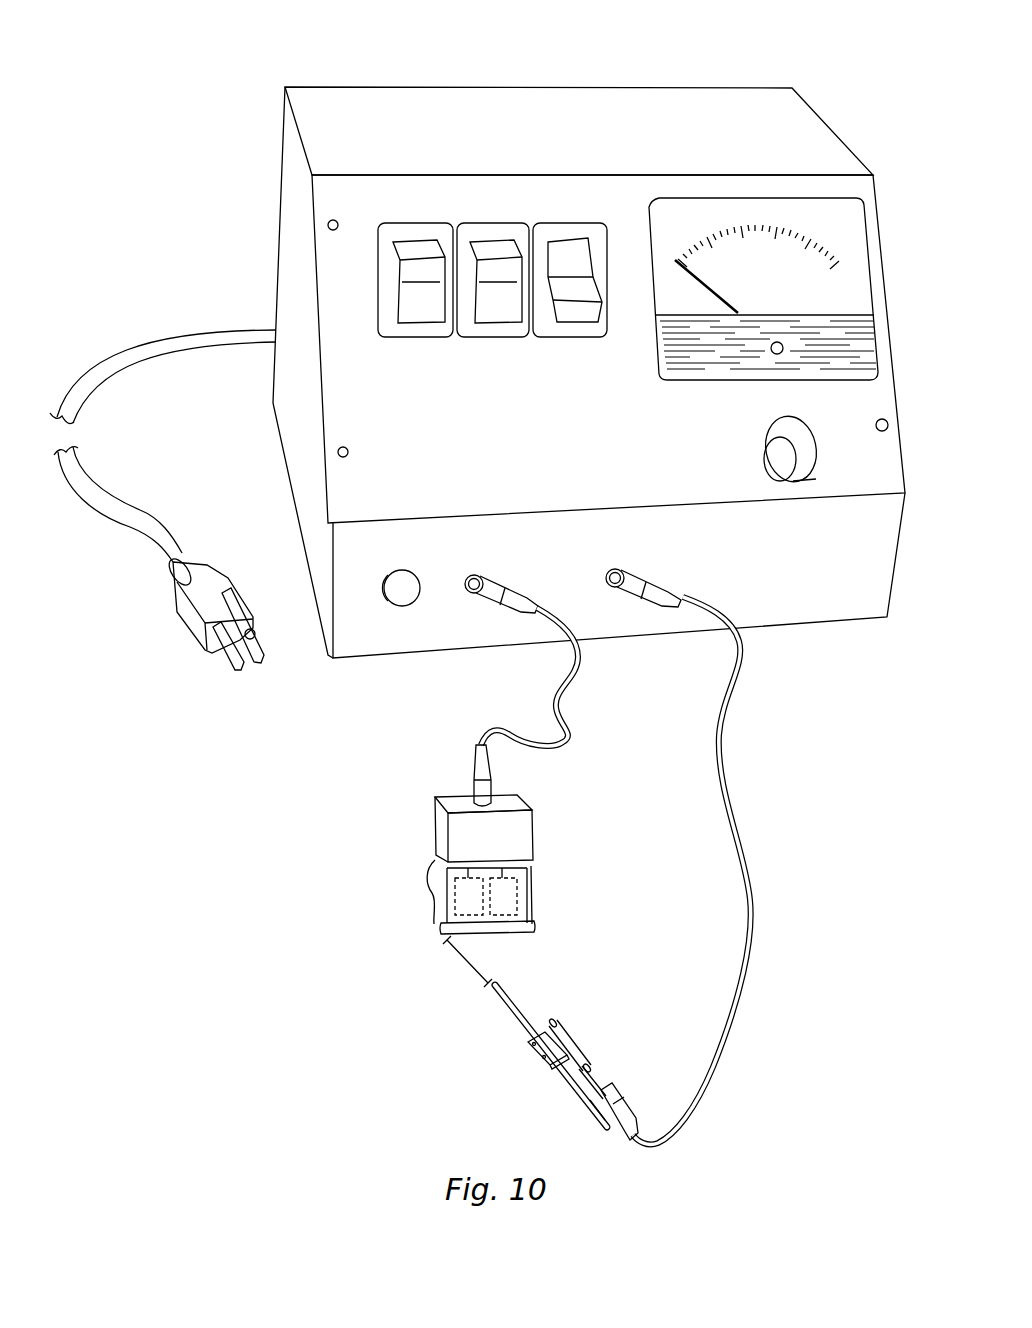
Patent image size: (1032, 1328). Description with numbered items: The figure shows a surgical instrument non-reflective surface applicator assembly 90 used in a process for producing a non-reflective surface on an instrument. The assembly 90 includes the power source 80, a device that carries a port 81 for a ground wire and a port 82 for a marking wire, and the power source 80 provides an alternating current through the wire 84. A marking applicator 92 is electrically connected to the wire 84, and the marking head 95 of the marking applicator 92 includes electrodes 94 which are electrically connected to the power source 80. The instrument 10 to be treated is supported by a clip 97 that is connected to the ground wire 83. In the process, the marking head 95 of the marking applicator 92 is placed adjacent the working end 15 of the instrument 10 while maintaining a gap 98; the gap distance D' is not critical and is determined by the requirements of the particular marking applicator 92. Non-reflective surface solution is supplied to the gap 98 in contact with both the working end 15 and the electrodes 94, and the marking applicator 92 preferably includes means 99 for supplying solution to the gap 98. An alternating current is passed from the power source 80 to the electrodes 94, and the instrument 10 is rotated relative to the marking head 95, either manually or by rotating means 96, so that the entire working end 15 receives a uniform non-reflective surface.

The assembly 90 is at (739, 62).
The power source 80 is at (885, 277).
The port 82 is at (482, 568).
The port 81 is at (657, 557).
The wire 84 is at (577, 737).
The ground wire 83 is at (752, 896).
The marking applicator 92 is at (433, 815).
The marking head 95 is at (535, 862).
The electrodes 94 is at (517, 887).
The means for supplying solution 99 is at (528, 928).
The gap 98 is at (462, 958).
The working end 15 is at (503, 1000).
The rotating means 96 is at (563, 1027).
The clip 97 is at (528, 1048).
The instrument 10 is at (592, 1118).